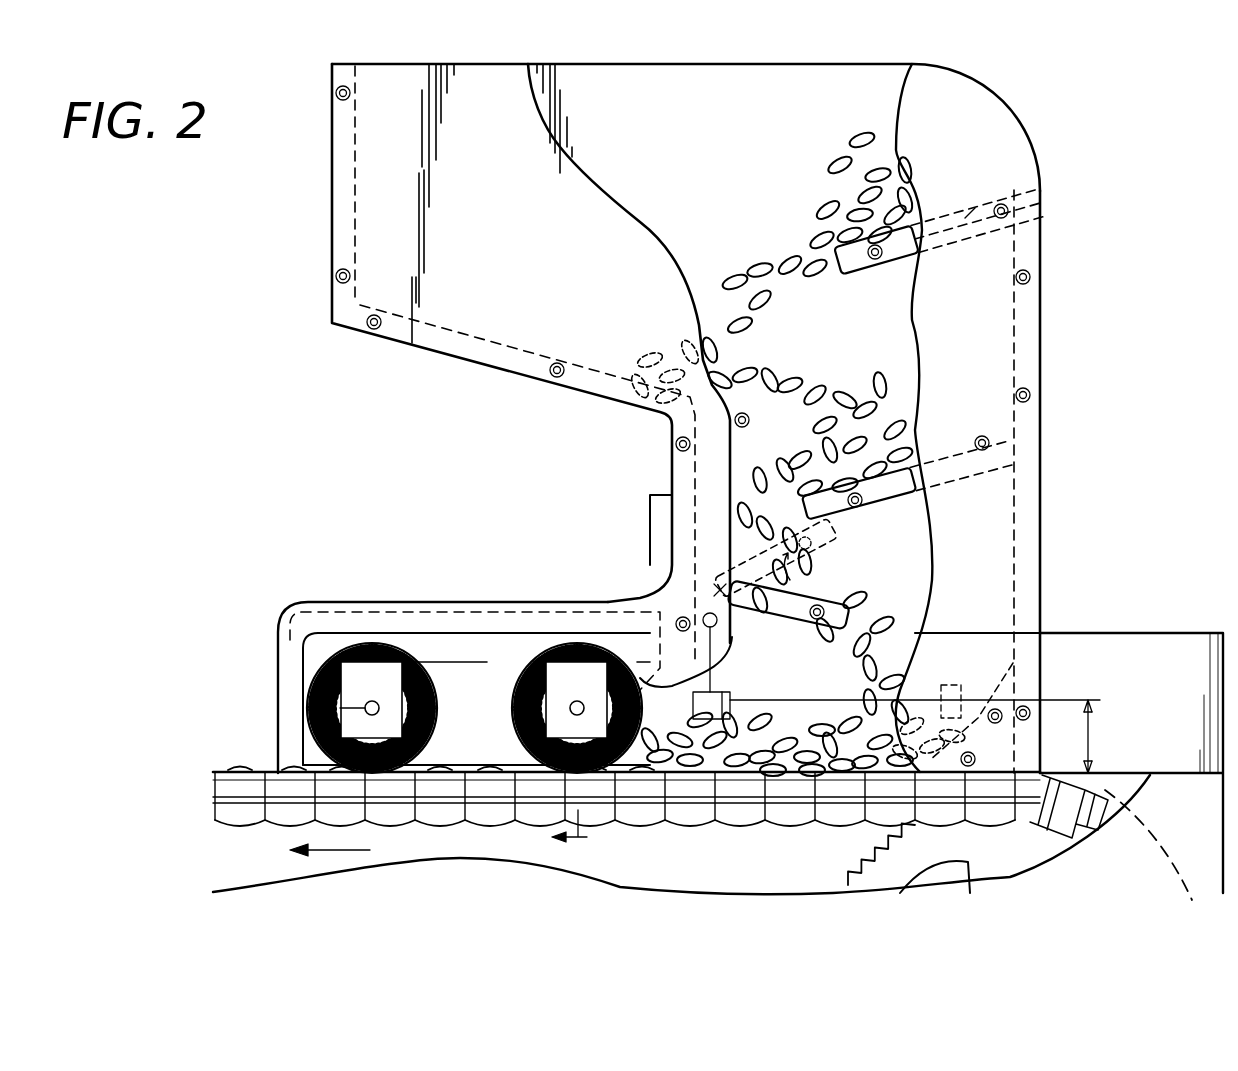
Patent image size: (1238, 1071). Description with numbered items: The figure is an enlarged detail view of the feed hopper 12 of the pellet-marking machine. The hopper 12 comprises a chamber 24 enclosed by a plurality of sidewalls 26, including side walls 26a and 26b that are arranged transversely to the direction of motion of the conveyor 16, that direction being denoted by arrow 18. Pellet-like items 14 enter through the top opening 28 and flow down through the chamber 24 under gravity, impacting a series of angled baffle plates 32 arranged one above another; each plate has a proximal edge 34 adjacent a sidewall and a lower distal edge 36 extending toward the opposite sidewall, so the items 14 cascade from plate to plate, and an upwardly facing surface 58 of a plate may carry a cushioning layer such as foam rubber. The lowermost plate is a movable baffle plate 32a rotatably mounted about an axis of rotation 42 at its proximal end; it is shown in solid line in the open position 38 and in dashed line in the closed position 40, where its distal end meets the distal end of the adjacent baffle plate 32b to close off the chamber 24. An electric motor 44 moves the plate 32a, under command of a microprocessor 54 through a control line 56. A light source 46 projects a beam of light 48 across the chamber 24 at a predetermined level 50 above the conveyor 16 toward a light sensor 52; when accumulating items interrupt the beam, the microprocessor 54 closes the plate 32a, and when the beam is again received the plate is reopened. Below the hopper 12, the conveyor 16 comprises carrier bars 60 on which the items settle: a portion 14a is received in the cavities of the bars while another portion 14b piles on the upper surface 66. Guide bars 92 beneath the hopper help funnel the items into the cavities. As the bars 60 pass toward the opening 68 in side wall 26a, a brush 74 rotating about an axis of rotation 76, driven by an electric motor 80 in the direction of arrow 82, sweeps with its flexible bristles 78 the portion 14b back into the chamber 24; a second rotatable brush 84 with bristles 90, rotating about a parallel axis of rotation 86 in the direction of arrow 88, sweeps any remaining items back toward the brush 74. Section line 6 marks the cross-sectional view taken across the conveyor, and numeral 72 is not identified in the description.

The feed hopper 12 is at (293, 212).
The pellet-like items 14 is at (838, 170).
The portion of pellet-like items received in cavities 14a is at (235, 770).
The portion of pellet-like items not received in cavities 14b is at (850, 775).
The conveyor 16 is at (243, 813).
The arrow indicating direction of motion of conveyor 18 is at (343, 850).
The chamber 24 is at (730, 418).
The sidewalls 26 is at (340, 222).
The side wall 26a is at (665, 485).
The side wall 26b is at (1042, 500).
The top opening 28 is at (770, 63).
The baffle plates 32 is at (985, 198).
The movable baffle plate 32a is at (802, 628).
The baffle plate 32b is at (965, 465).
The proximal edge 34 is at (358, 330).
The distal edge 36 is at (838, 270).
The open position 38 is at (880, 640).
The closed position 40 is at (830, 548).
The axis of rotation 42 is at (700, 600).
The electric motor 44 is at (700, 620).
The light source 46 is at (945, 685).
The beam of light 48 is at (803, 698).
The predetermined level 50 is at (1095, 735).
The light sensor 52 is at (697, 719).
The microprocessor 54 is at (746, 772).
The control line 56 is at (728, 650).
The upwardly facing surface 58 is at (972, 212).
The carrier bars 60 is at (525, 815).
The upper surface 66 is at (677, 760).
The opening 68 is at (610, 885).
The first brush shaft 72 is at (484, 580).
The brush 74 is at (510, 700).
The axis of rotation 76 is at (550, 580).
The flexible bristles 78 is at (488, 600).
The electric motor 80 is at (555, 600).
The arrow indicating rotational motion of brush 82 is at (660, 775).
The second rotatable brush 84 is at (300, 742).
The axis of rotation 86 is at (300, 700).
The arrow indicating rotation of second brush 88 is at (490, 690).
The bristles 90 is at (352, 605).
The guide bars 92 is at (460, 772).
The section line 6 is at (573, 766).